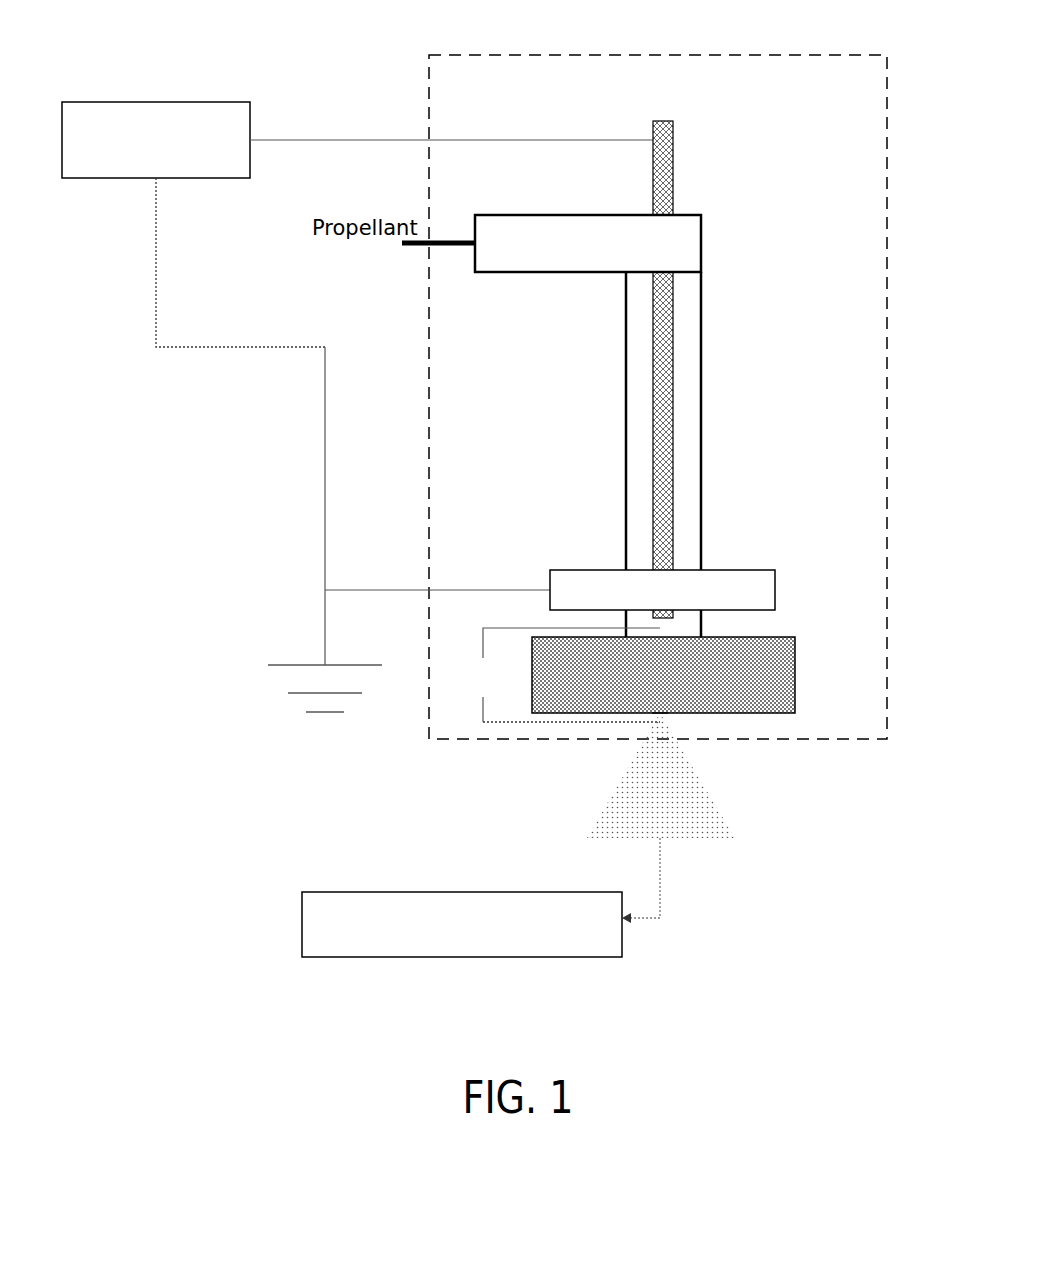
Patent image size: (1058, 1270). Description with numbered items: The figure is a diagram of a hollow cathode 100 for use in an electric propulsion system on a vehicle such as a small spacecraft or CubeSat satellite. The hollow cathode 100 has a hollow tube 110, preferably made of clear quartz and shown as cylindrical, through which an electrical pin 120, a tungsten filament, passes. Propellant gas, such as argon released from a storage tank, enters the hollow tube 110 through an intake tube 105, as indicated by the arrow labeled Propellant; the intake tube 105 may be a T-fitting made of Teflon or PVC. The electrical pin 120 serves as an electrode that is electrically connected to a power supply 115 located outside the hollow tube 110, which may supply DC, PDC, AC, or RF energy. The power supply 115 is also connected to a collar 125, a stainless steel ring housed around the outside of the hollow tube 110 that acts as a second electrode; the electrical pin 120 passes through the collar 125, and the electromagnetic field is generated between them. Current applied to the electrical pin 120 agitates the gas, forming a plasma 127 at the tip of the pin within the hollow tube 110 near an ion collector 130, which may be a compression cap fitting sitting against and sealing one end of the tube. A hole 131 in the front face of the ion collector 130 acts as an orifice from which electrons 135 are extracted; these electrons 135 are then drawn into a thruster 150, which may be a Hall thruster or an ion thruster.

The hollow cathode 100 is at (872, 55).
The intake tube 105 is at (695, 205).
The hollow tube 110 is at (702, 322).
The power supply 115 is at (137, 97).
The electrical pin 120 is at (663, 121).
The collar 125 is at (757, 568).
The plasma 127 is at (563, 675).
The ion collector 130 is at (777, 637).
The hole 131 is at (687, 713).
The electrons 135 is at (620, 840).
The thruster 150 is at (320, 886).